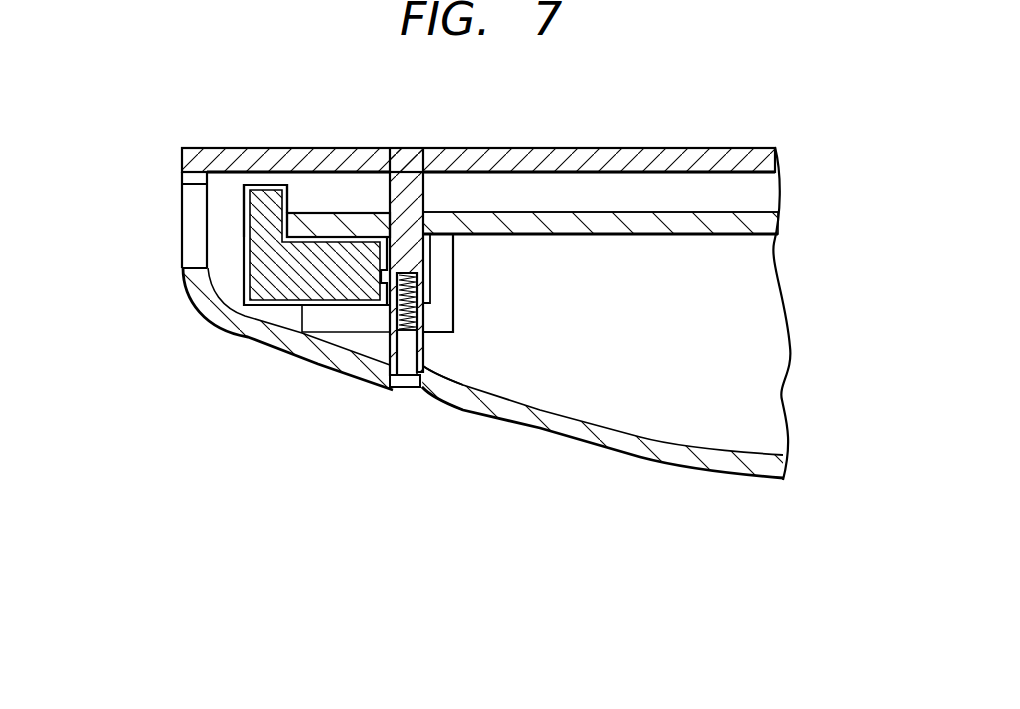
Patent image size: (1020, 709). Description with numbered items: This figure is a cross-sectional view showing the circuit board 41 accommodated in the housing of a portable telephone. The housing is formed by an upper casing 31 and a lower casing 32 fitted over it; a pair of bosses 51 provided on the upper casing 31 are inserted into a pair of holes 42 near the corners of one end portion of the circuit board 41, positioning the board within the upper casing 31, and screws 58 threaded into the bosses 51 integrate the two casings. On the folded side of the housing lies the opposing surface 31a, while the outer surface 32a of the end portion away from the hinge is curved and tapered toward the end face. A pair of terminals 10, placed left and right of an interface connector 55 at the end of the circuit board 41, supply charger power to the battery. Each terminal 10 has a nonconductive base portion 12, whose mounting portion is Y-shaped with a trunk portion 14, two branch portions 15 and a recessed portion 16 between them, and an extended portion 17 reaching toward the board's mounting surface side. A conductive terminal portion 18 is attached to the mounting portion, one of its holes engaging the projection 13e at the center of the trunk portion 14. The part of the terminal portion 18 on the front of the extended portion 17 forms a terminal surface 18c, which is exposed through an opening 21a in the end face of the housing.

The terminal 10 is at (285, 422).
The base portion 12 is at (297, 282).
The projection 13e is at (354, 305).
The trunk portion 14 is at (318, 242).
The branch portions 15 is at (432, 280).
The recessed portion 16 is at (432, 250).
The extended portion 17 is at (260, 190).
The terminal portion 18 is at (207, 308).
The terminal surface 18c is at (243, 245).
The openings 21a is at (193, 217).
The upper casing 31 is at (647, 150).
The opposing surface 31a is at (724, 148).
The lower casing 32 is at (624, 437).
The outer surface 32a is at (430, 400).
The circuit board 41 is at (700, 231).
The holes 42 is at (427, 217).
The bosses 51 is at (408, 198).
The interface connector 55 is at (437, 320).
The screws 58 is at (407, 367).